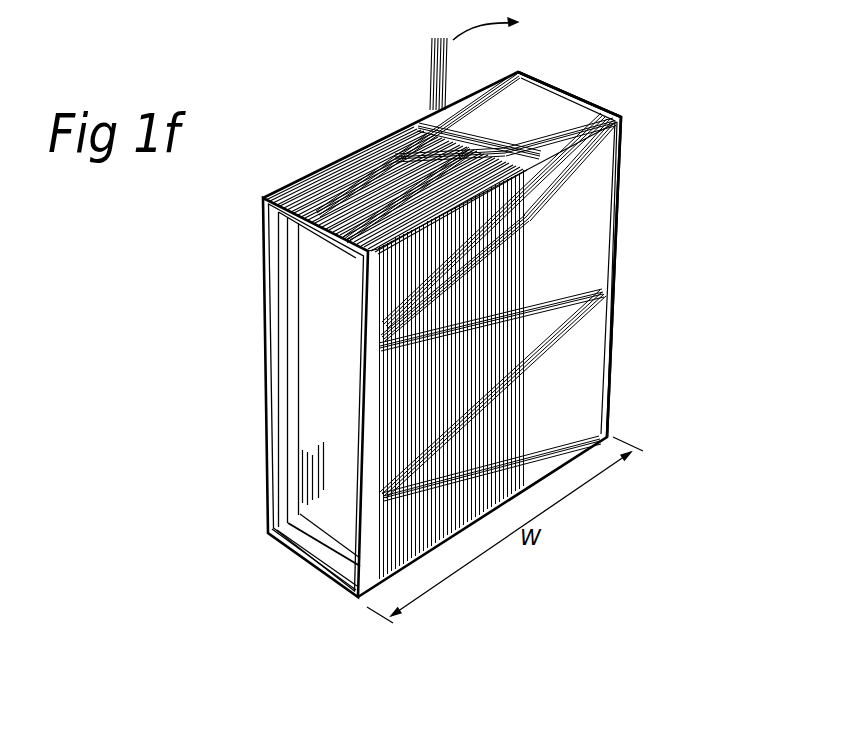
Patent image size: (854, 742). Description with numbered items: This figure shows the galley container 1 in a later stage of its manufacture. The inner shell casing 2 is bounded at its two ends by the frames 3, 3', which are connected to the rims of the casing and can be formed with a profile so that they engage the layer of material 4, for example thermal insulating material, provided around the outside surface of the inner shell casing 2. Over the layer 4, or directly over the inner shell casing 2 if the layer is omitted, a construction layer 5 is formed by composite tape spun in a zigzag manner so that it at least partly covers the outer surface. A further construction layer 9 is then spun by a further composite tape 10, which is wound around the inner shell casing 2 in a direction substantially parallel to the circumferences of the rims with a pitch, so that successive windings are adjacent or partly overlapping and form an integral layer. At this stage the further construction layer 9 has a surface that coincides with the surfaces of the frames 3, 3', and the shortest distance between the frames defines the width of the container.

The galley container 1 is at (617, 73).
The inner shell casing 2 is at (316, 425).
The frame 3 is at (280, 397).
The frame 3' is at (569, 238).
The layer of material 4 is at (593, 237).
The construction layer 5 is at (487, 100).
The further construction layer 9 is at (320, 190).
The further composite tape 10 is at (436, 62).